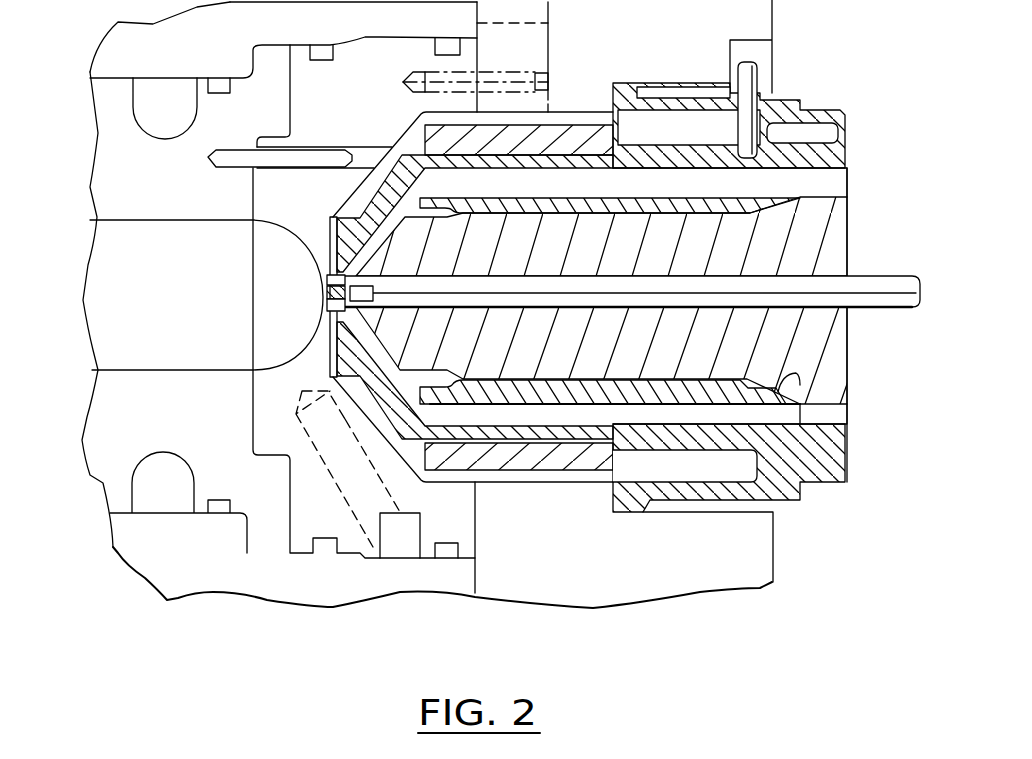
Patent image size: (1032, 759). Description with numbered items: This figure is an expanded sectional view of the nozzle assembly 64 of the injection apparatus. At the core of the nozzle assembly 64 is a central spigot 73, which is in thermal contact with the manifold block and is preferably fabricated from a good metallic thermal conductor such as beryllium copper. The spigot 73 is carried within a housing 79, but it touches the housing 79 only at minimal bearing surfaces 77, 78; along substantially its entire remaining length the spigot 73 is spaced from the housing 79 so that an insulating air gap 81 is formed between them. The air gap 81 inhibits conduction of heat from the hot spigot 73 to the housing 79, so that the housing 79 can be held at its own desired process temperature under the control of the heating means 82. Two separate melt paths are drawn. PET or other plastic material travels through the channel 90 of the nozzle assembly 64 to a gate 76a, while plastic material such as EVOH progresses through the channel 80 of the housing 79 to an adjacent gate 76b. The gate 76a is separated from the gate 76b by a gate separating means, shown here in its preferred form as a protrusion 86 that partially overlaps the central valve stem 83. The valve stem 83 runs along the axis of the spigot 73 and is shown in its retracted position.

The nozzle assembly 64 is at (212, 386).
The central spigot 73 is at (815, 333).
The gate 76a is at (327, 278).
The adjacent gate 76b is at (327, 304).
The bearing surface 77 is at (420, 362).
The bearing surface 78 is at (790, 372).
The housing 79 is at (787, 468).
The channel 80 is at (650, 413).
The insulating air gap 81 is at (703, 381).
The heating means 82 is at (505, 455).
The central valve stem 83 is at (847, 285).
The protrusion 86 is at (326, 293).
The channel 90 is at (830, 183).